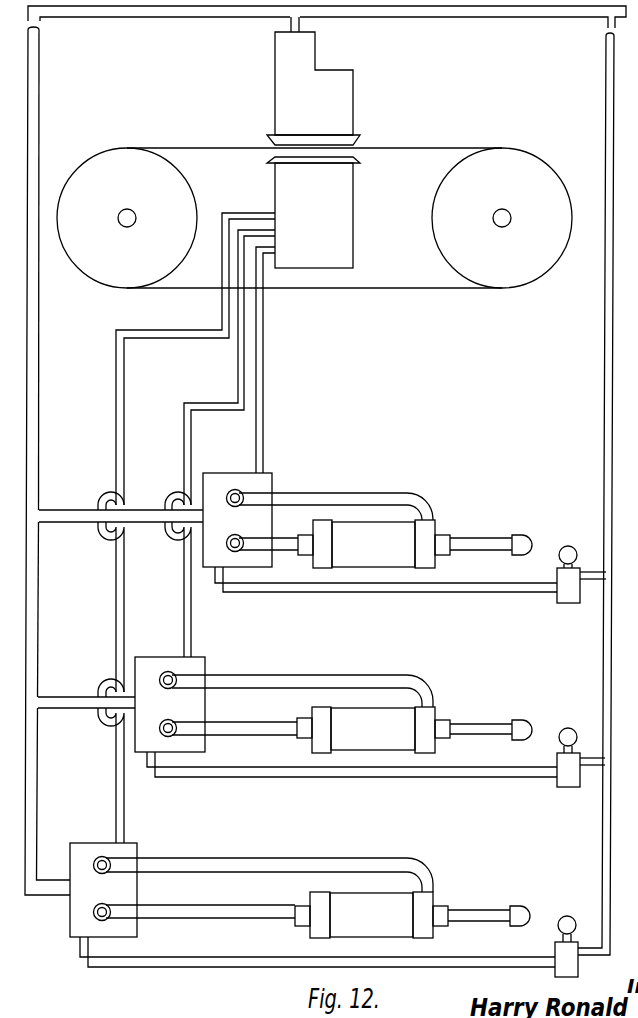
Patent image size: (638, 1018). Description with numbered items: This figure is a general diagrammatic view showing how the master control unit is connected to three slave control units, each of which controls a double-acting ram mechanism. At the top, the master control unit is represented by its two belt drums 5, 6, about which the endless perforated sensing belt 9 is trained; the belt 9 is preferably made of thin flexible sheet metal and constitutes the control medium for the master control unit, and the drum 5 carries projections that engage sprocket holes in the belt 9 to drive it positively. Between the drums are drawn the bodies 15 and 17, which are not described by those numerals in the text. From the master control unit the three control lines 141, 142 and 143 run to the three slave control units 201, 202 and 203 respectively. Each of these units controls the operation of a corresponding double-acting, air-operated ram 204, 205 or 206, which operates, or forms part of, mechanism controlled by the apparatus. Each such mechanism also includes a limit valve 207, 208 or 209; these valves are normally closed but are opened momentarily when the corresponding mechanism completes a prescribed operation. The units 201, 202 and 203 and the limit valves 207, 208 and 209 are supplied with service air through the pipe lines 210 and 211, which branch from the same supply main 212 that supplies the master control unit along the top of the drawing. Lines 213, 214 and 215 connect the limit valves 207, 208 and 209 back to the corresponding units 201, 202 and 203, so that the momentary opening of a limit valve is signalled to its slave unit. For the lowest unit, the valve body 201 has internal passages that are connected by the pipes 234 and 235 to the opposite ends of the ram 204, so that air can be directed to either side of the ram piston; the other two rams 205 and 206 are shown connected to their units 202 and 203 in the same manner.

The belt drum 5 is at (165, 150).
The belt drum 6 is at (463, 160).
The endless perforated sensing belt 9 is at (198, 148).
The distributor block 15 is at (275, 177).
The valve body 17 is at (322, 117).
The control line 141 is at (194, 341).
The control line 142 is at (184, 422).
The control line 143 is at (263, 446).
The slave control unit 201 is at (141, 856).
The slave control unit 202 is at (207, 667).
The slave control unit 203 is at (256, 485).
The double-acting air-operated ram 204 is at (346, 892).
The double-acting air-operated ram 205 is at (352, 708).
The double-acting air-operated ram 206 is at (343, 520).
The limit valve 207 is at (563, 946).
The limit valve 208 is at (564, 760).
The limit valve 209 is at (568, 556).
The pipe line 210 is at (40, 312).
The pipe line 211 is at (603, 333).
The supply main 212 is at (405, 9).
The line 213 is at (230, 960).
The line 214 is at (318, 778).
The line 215 is at (404, 592).
The pipe 234 is at (247, 862).
The pipe 235 is at (191, 906).